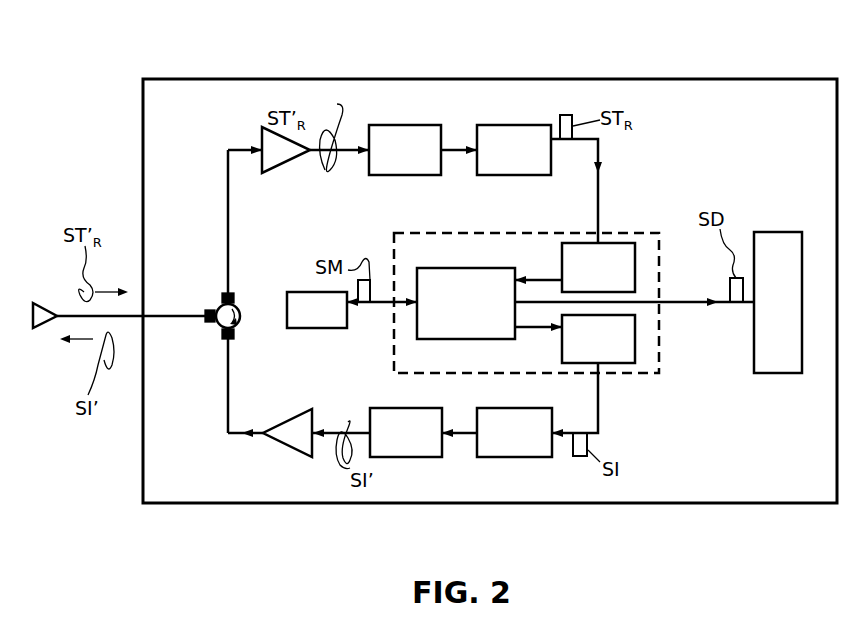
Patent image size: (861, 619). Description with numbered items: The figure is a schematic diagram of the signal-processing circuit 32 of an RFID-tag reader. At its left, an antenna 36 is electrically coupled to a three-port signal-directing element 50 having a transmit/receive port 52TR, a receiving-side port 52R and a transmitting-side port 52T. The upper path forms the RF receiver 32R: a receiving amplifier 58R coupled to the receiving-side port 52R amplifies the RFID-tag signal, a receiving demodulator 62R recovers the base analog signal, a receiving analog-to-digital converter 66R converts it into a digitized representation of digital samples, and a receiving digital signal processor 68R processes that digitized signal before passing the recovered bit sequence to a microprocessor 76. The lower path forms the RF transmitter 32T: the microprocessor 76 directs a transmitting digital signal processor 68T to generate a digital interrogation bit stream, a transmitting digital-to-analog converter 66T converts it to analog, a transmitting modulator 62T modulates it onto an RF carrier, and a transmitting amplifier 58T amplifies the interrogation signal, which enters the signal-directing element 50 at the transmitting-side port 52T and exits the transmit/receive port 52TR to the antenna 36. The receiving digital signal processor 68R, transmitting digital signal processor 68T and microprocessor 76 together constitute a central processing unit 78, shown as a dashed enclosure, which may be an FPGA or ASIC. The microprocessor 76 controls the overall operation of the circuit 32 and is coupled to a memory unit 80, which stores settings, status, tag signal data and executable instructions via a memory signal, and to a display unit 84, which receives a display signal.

The signal-processing circuit 32 is at (688, 58).
The RF receiver 32R is at (655, 149).
The RF transmitter 32T is at (657, 412).
The antenna 36 is at (43, 330).
The three-port signal-directing element 50 is at (236, 310).
The receiving-side port 52R is at (222, 298).
The transmitting-side port 52T is at (235, 331).
The transmit/receive port 52TR is at (213, 322).
The receiving amplifier 58R is at (262, 135).
The transmitting amplifier 58T is at (285, 445).
The receiving demodulator 62R is at (405, 150).
The transmitting modulator 62T is at (406, 432).
The receiving analog-to-digital converter 66R is at (514, 150).
The transmitting digital-to-analog converter 66T is at (514, 432).
The receiving digital signal processor 68R is at (598, 267).
The transmitting digital signal processor 68T is at (598, 339).
The microprocessor 76 is at (466, 303).
The central processing unit 78 is at (490, 233).
The memory unit 80 is at (317, 310).
The display unit 84 is at (778, 302).